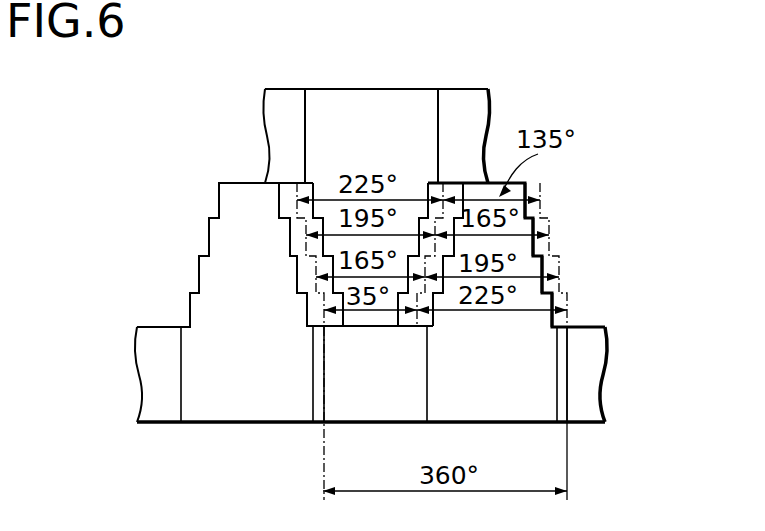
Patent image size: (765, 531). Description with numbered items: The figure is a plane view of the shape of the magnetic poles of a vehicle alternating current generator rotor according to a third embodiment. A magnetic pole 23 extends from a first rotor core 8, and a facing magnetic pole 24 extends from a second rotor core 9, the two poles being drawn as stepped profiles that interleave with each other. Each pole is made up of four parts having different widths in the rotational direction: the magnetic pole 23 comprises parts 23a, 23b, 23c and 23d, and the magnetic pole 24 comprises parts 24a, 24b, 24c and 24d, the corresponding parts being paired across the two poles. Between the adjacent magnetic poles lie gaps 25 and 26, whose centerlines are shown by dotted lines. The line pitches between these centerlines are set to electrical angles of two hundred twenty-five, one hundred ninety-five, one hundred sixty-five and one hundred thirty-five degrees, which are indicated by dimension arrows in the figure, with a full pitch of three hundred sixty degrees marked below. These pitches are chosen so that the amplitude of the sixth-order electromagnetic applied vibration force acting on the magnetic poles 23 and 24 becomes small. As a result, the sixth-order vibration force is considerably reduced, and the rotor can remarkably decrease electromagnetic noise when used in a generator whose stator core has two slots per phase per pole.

The first rotor core 8 is at (244, 424).
The second rotor core 9 is at (413, 112).
The magnetic pole 23 is at (525, 300).
The part of magnetic pole 23 23a is at (562, 300).
The part of magnetic pole 23 23b is at (552, 264).
The part of magnetic pole 23 23c is at (547, 222).
The part of magnetic pole 23 23d is at (538, 185).
The magnetic pole 24 is at (325, 208).
The part of magnetic pole 24 24a is at (312, 210).
The part of magnetic pole 24 24b is at (326, 247).
The part of magnetic pole 24 24c is at (332, 265).
The part of magnetic pole 24 24d is at (308, 322).
The gap 25 is at (440, 188).
The gap 26 is at (312, 307).